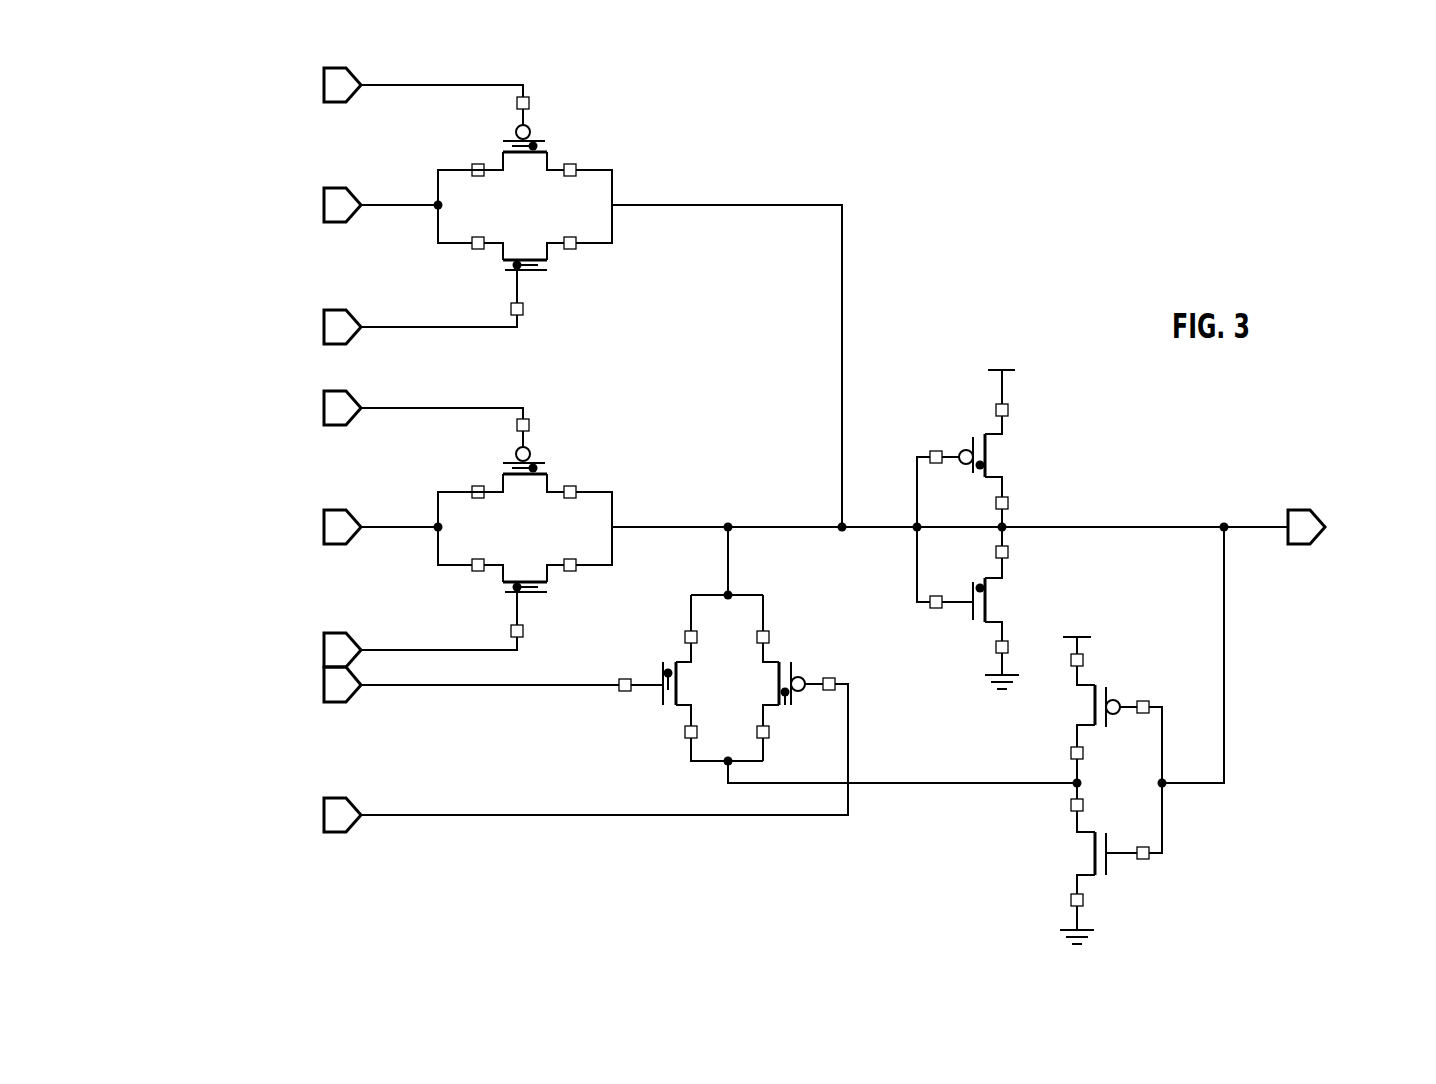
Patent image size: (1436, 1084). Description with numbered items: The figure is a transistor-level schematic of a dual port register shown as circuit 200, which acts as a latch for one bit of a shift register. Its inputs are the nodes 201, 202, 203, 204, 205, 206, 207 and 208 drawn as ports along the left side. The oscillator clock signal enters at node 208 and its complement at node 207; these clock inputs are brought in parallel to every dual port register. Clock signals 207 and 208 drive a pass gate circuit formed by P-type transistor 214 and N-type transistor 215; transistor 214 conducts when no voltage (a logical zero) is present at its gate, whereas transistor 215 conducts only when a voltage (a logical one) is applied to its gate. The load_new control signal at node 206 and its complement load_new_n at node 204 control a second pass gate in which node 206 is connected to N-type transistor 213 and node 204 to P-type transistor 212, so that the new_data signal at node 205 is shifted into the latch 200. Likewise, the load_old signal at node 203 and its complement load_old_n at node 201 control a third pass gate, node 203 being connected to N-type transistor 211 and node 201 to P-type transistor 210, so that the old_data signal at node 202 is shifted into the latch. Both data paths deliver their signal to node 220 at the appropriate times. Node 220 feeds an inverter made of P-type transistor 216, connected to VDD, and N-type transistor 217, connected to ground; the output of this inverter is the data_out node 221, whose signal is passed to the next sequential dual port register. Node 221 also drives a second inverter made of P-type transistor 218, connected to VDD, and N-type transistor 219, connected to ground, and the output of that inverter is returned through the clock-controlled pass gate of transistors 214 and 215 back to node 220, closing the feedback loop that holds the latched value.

The dual port register circuit 200 is at (160, 149).
The load_old_n input node 201 is at (336, 103).
The old_data input node 202 is at (336, 223).
The load_old input node 203 is at (352, 343).
The load_new_n input node 204 is at (336, 426).
The new_data input node 205 is at (336, 545).
The load_new input node 206 is at (350, 636).
The complement clock input node 207 is at (354, 703).
The oscillator clock input node 208 is at (352, 800).
The P-type transistor 210 is at (552, 133).
The N-type transistor 211 is at (550, 262).
The P-type transistor 212 is at (552, 462).
The N-type transistor 213 is at (550, 585).
The P-type transistor 214 is at (800, 662).
The N-type transistor 215 is at (655, 698).
The P-type transistor 216 is at (968, 445).
The N-type transistor 217 is at (970, 605).
The P-type transistor 218 is at (1113, 690).
The N-type transistor 219 is at (1115, 863).
The internal node 220 is at (852, 497).
The data_out node 221 is at (1300, 545).